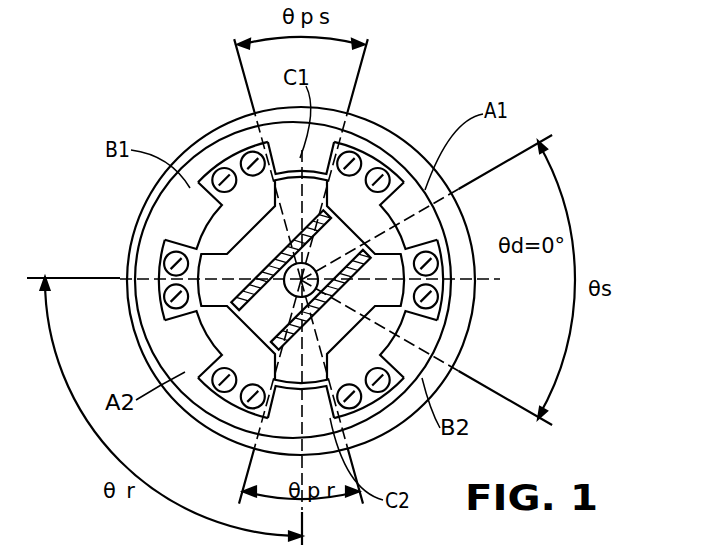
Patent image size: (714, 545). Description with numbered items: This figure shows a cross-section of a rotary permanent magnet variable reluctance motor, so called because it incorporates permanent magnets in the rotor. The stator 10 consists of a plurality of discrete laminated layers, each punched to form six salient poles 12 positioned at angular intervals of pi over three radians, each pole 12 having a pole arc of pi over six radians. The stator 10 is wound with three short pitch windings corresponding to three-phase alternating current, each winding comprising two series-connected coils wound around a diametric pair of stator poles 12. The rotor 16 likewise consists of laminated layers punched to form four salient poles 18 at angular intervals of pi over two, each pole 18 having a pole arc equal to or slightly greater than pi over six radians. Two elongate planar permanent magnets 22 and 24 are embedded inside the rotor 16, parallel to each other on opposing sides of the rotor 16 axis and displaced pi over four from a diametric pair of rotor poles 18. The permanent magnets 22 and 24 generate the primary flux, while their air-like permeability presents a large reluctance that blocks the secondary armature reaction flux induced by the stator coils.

The stator 10 is at (140, 236).
The salient pole 12 is at (263, 148).
The rotor 16 is at (330, 368).
The rotor salient pole 18 is at (353, 152).
The permanent magnet 22 is at (212, 160).
The permanent magnet 24 is at (452, 250).